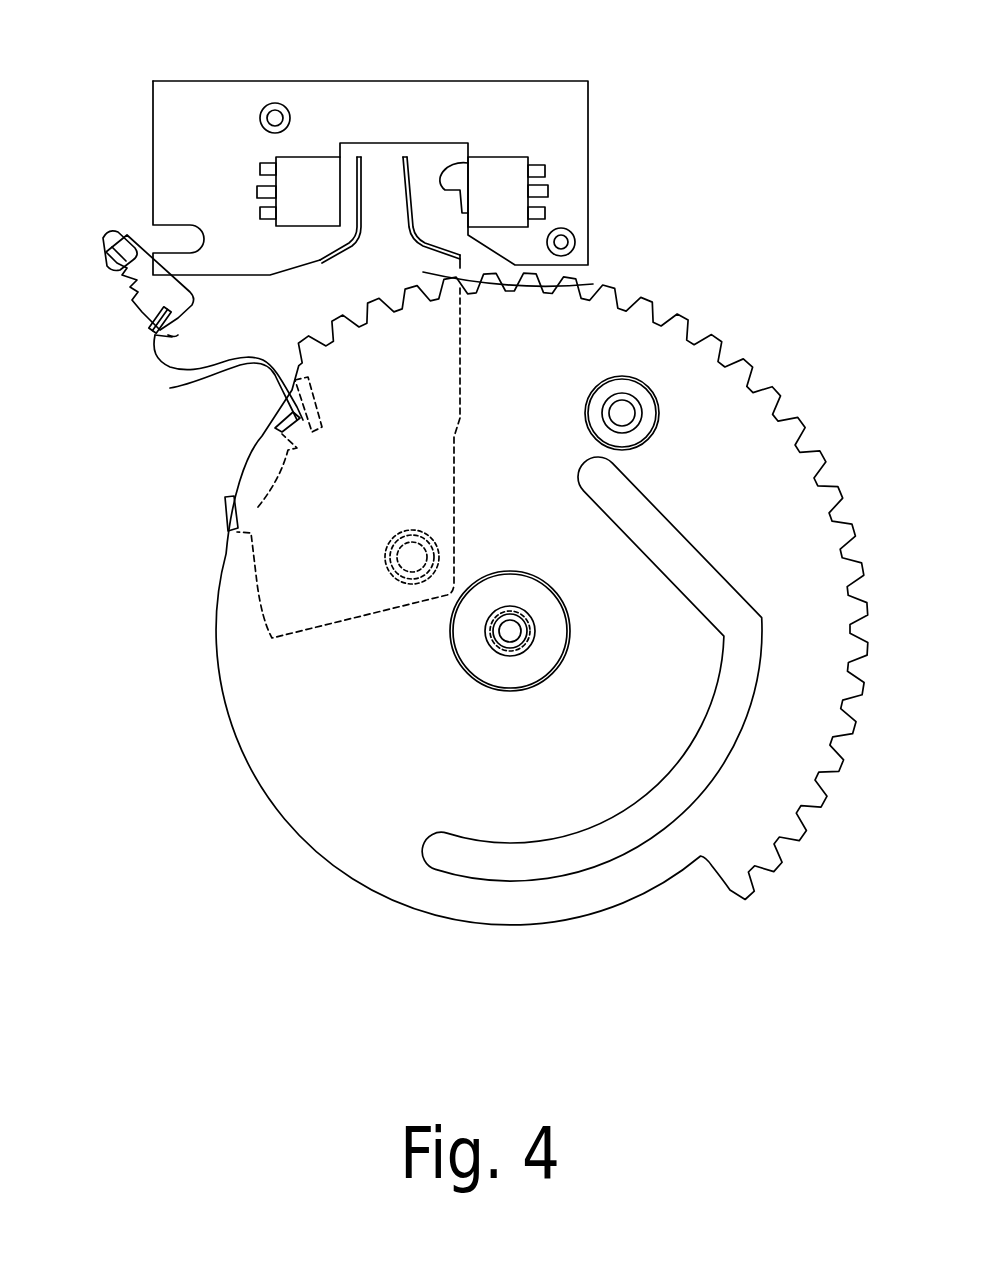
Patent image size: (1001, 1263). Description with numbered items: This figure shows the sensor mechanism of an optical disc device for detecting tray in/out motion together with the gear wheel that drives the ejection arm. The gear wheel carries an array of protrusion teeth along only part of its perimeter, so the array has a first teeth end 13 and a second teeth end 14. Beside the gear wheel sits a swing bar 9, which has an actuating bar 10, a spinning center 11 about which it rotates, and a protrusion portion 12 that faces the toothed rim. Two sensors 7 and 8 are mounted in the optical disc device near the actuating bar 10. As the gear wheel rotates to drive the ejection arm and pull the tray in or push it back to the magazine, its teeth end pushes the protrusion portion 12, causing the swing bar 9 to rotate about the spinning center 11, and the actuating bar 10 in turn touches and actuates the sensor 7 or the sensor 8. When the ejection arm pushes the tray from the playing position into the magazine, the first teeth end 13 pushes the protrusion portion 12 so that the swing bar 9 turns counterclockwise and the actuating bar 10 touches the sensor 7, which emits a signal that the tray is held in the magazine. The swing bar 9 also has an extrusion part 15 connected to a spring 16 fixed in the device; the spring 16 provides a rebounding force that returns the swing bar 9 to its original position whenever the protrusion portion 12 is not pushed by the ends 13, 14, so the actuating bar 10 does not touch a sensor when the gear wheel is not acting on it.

The sensor 7 is at (307, 190).
The sensor 8 is at (510, 187).
The swing bar 9 is at (593, 284).
The actuating bar 10 is at (380, 185).
The spinning center 11 is at (413, 557).
The protrusion portion 12 is at (278, 428).
The first teeth end 13 is at (170, 388).
The second teeth end 14 is at (728, 889).
The extrusion part 15 is at (155, 330).
The spring 16 is at (108, 264).